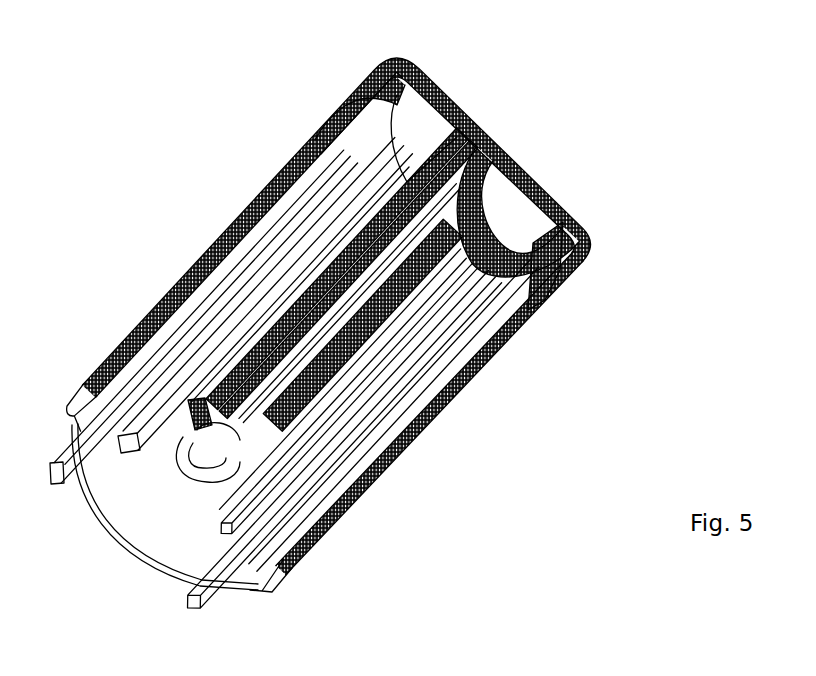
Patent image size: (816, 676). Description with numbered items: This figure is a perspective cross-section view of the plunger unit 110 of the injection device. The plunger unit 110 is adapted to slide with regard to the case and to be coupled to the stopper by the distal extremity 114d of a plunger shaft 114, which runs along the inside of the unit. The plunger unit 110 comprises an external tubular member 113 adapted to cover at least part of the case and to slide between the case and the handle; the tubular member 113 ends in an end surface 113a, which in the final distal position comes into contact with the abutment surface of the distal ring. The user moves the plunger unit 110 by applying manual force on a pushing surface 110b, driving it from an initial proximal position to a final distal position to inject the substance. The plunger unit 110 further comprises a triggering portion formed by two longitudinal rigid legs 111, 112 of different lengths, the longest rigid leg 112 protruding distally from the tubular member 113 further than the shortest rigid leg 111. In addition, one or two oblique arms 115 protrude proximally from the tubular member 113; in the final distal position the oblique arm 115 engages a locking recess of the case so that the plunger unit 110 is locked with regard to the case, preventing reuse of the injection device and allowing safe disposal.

The plunger unit 110 is at (592, 107).
The pushing surface 110b is at (460, 105).
The shortest rigid leg 111 is at (242, 522).
The longest rigid leg 112 is at (205, 610).
The external tubular member 113 is at (452, 431).
The end surface 113a is at (290, 573).
The plunger shaft 114 is at (460, 225).
The distal extremity 114d is at (240, 462).
The oblique arm 115 is at (538, 308).